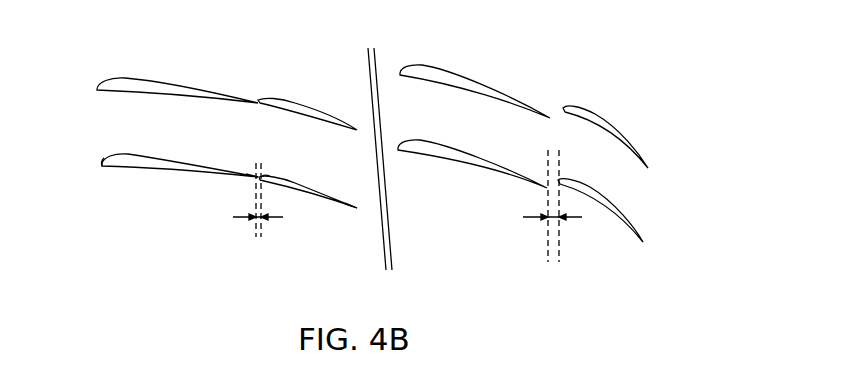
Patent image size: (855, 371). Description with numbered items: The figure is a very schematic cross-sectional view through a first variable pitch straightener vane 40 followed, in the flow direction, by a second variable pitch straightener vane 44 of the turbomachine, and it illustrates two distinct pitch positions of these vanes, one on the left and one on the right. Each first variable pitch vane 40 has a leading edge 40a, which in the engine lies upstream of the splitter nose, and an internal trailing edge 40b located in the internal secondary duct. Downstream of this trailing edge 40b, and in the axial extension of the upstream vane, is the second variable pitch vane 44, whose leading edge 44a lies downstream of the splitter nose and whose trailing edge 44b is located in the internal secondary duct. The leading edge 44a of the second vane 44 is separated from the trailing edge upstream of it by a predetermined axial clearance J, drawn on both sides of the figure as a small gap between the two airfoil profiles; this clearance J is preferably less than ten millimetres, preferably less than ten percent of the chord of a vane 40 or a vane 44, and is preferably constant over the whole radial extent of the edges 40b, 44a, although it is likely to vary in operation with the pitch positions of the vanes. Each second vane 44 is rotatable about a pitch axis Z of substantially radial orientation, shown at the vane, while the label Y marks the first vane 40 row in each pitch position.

The first variable pitch vane 40 is at (143, 92).
The leading edge 40a is at (101, 165).
The internal trailing edge 40b is at (257, 177).
The second variable pitch straightener vane 44 is at (329, 111).
The leading edge 44a is at (262, 177).
The trailing edge 44b is at (357, 206).
The main blade row Y is at (177, 148).
The pitch axis Z is at (453, 178).
The axial clearance J is at (241, 217).